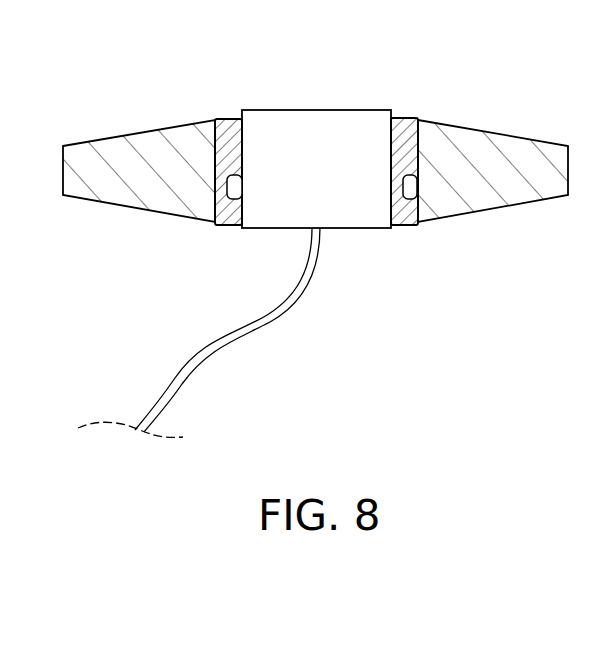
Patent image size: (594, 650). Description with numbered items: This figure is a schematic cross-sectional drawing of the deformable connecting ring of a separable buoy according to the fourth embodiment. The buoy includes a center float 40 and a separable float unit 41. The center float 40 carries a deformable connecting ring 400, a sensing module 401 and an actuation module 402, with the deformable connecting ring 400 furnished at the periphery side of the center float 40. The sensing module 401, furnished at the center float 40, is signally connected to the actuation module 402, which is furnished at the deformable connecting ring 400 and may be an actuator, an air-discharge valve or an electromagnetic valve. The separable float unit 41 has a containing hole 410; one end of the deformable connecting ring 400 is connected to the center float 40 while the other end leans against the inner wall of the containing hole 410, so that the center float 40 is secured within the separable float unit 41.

The center float 40 is at (303, 127).
The deformable connecting ring 400 is at (403, 128).
The containing hole 410 is at (238, 137).
The separable float unit 41 is at (492, 143).
The sensing module 401 is at (235, 187).
The actuation module 402 is at (412, 188).